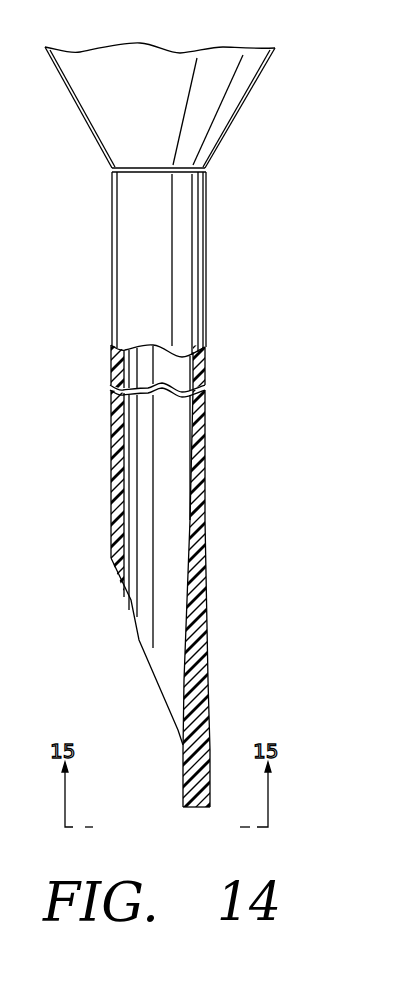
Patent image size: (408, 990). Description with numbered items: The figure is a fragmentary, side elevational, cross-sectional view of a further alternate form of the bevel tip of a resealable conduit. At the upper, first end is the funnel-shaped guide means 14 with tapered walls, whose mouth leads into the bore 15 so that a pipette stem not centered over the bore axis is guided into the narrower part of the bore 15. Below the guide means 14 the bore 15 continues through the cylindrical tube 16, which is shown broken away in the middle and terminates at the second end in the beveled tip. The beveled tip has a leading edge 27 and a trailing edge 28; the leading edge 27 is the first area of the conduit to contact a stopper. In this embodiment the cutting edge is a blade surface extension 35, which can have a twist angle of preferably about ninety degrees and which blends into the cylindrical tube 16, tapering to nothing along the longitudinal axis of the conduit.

The guide means 14 is at (250, 90).
The cylindrical tube 16 is at (206, 257).
The trailing edge 28 is at (121, 571).
The bore 15 is at (160, 660).
The leading edge 27 is at (184, 779).
The blade surface extension 35 is at (183, 798).